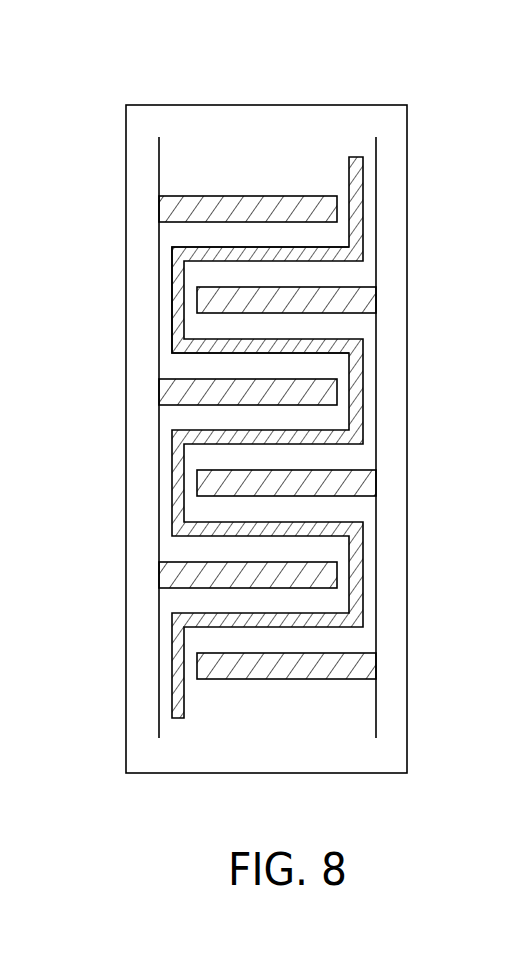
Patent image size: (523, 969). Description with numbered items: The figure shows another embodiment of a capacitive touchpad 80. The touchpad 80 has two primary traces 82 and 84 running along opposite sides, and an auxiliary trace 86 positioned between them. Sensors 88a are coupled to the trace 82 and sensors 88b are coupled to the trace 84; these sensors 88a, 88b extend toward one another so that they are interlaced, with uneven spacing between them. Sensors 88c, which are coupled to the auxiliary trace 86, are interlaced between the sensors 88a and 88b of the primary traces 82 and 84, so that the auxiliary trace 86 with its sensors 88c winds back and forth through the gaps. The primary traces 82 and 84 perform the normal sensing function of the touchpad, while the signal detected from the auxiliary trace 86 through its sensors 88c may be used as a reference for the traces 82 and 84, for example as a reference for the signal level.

The capacitive touchpad 80 is at (266, 105).
The trace 82 is at (159, 145).
The trace 84 is at (376, 145).
The auxiliary trace 86 is at (356, 157).
The sensors 88a is at (230, 207).
The sensors 88b is at (370, 298).
The sensors 88c is at (172, 250).